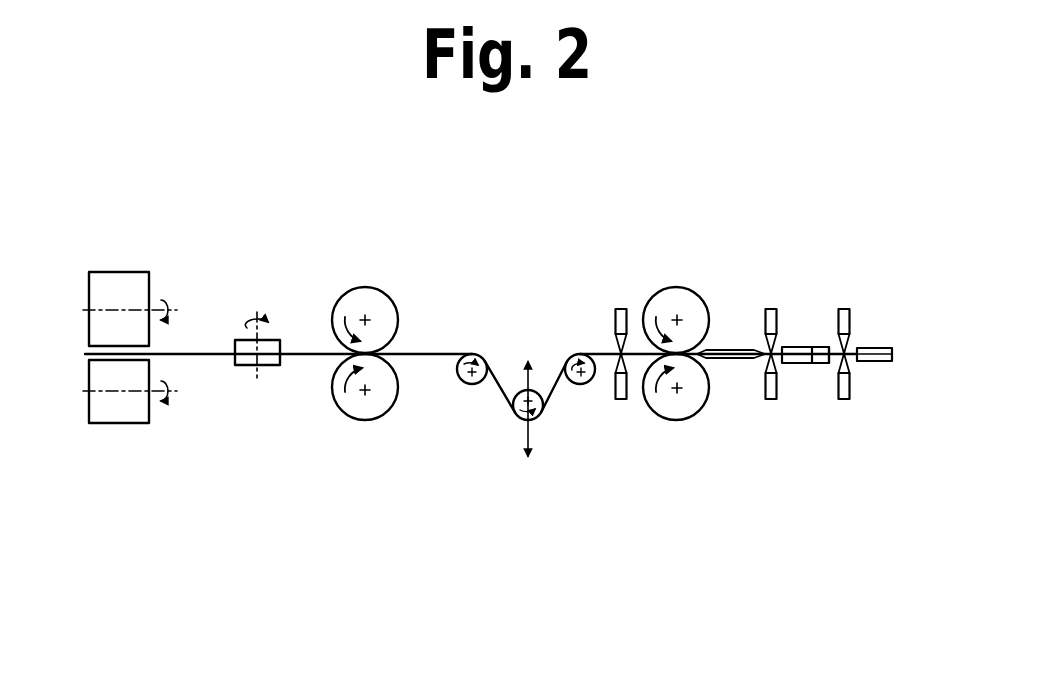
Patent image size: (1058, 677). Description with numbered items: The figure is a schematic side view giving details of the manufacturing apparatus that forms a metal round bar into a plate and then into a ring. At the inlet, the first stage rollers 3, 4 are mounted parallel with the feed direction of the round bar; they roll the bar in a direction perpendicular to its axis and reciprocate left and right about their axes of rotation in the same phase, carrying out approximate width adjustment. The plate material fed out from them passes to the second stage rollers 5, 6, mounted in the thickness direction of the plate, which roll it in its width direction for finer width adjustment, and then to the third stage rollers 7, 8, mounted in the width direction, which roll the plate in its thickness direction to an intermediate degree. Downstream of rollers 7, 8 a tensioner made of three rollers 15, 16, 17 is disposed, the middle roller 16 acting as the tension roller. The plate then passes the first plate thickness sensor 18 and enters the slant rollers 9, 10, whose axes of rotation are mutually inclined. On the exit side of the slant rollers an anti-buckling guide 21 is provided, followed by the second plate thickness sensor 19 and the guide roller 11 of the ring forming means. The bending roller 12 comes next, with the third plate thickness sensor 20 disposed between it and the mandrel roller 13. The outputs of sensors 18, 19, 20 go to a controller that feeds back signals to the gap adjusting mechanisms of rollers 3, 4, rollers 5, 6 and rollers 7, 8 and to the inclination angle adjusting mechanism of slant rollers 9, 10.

The roller 3 is at (149, 272).
The roller 4 is at (149, 423).
The roller 5 is at (271, 278).
The roller 6 is at (280, 340).
The roller 7 is at (390, 290).
The roller 8 is at (368, 420).
The slant roller 9 is at (679, 294).
The slant roller 10 is at (680, 420).
The guide roller 11 is at (790, 363).
The bending roller 12 is at (882, 348).
The mandrel roller 13 is at (822, 347).
The roller 15 is at (471, 385).
The middle roller 16 is at (582, 425).
The roller 17 is at (568, 358).
The first plate thickness sensor 18 is at (621, 308).
The second plate thickness sensor 19 is at (771, 309).
The third plate thickness sensor 20 is at (844, 309).
The anti-buckling guide 21 is at (735, 359).